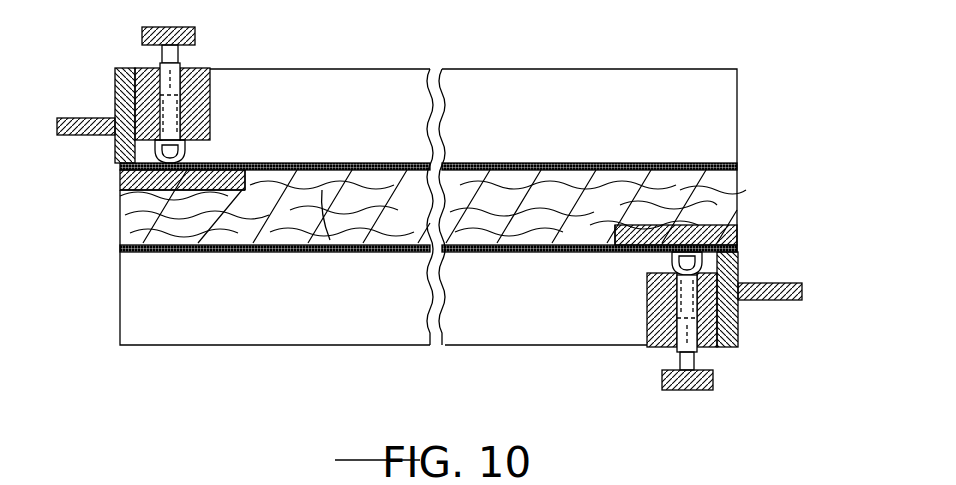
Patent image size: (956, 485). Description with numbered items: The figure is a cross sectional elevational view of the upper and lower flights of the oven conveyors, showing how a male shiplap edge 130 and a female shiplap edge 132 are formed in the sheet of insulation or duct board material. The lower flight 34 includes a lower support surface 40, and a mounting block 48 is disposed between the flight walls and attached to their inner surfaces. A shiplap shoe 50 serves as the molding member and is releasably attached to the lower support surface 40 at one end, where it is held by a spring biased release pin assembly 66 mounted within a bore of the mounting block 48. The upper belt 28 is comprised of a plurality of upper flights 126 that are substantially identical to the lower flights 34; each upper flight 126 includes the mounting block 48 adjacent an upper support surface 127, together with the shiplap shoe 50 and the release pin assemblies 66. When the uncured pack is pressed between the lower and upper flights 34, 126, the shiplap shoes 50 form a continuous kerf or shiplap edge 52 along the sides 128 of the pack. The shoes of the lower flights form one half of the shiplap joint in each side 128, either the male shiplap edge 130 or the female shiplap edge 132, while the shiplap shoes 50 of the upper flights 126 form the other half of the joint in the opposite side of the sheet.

The upper belt 28 is at (157, 81).
The lower flight 34 is at (778, 324).
The lower support surface 40 is at (378, 240).
The mounting block 48 is at (210, 92).
The shiplap shoe 50 is at (206, 192).
The shiplap edge 52 is at (107, 190).
The spring biased release pin assembly 66 is at (165, 74).
The upper flight 126 is at (56, 126).
The upper support surface 127 is at (328, 244).
The side of the pack 128 is at (116, 236).
The male shiplap edge 130 is at (705, 215).
The female shiplap edge 132 is at (160, 212).